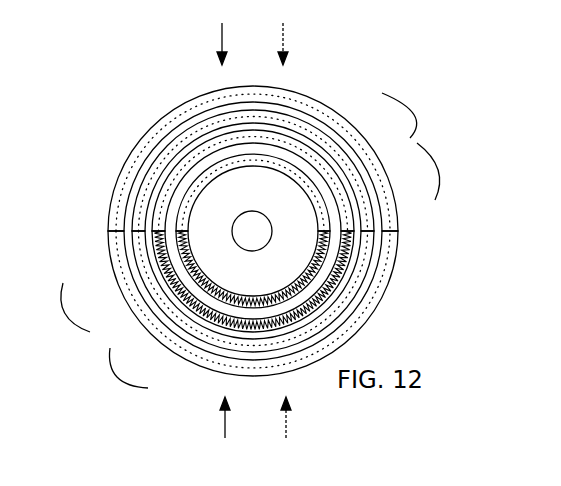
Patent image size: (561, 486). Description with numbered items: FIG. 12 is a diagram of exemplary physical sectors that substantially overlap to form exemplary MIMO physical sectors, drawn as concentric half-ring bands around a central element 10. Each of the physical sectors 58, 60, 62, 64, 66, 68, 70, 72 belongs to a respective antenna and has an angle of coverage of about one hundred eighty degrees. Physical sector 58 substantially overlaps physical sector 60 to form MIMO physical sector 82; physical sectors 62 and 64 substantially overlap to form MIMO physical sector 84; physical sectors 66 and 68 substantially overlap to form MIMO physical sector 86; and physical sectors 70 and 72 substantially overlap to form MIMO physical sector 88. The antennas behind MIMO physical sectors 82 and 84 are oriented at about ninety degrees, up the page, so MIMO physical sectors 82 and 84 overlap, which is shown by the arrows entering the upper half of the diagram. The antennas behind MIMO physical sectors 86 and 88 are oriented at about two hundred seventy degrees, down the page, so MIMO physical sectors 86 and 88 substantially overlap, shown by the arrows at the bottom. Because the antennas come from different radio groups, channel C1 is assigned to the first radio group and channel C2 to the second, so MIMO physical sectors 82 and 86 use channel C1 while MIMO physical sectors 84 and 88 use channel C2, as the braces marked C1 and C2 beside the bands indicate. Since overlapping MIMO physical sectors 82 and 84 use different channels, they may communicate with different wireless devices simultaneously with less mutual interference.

The core 10 is at (243, 242).
The physical sector 58 is at (322, 205).
The physical sector 60 is at (330, 175).
The physical sector 62 is at (336, 147).
The physical sector 64 is at (338, 124).
The physical sector 66 is at (180, 243).
The physical sector 68 is at (172, 281).
The physical sector 70 is at (172, 316).
The physical sector 72 is at (183, 350).
The MIMO physical sector 82 is at (221, 32).
The MIMO physical sector 84 is at (281, 32).
The MIMO physical sector 86 is at (223, 432).
The MIMO physical sector 88 is at (285, 432).
The channel C1 is at (253, 240).
The channel C2 is at (265, 248).